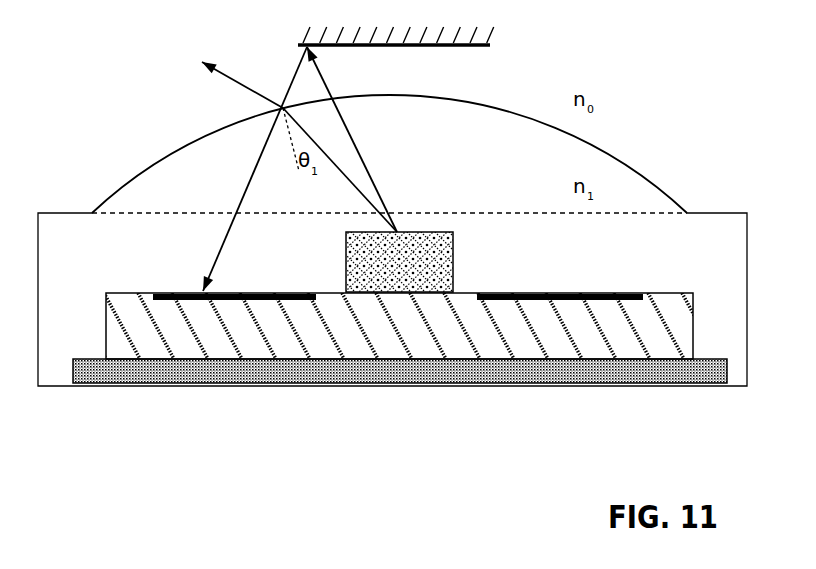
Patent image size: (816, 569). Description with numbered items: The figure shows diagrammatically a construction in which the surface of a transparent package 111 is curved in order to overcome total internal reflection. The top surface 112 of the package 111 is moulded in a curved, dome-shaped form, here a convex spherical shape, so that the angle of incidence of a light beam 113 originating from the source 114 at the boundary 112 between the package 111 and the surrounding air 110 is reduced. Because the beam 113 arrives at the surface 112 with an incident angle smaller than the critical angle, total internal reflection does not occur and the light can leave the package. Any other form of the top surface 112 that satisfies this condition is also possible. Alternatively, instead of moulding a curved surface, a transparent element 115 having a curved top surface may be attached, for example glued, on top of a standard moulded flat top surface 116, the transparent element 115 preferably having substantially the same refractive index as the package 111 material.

The air 110 is at (439, 52).
The package 111 is at (392, 299).
The top surface 112 is at (615, 157).
The light beam 113 is at (347, 180).
The source 114 is at (425, 265).
The transparent element 115 is at (192, 170).
The flat top surface 116 is at (389, 241).